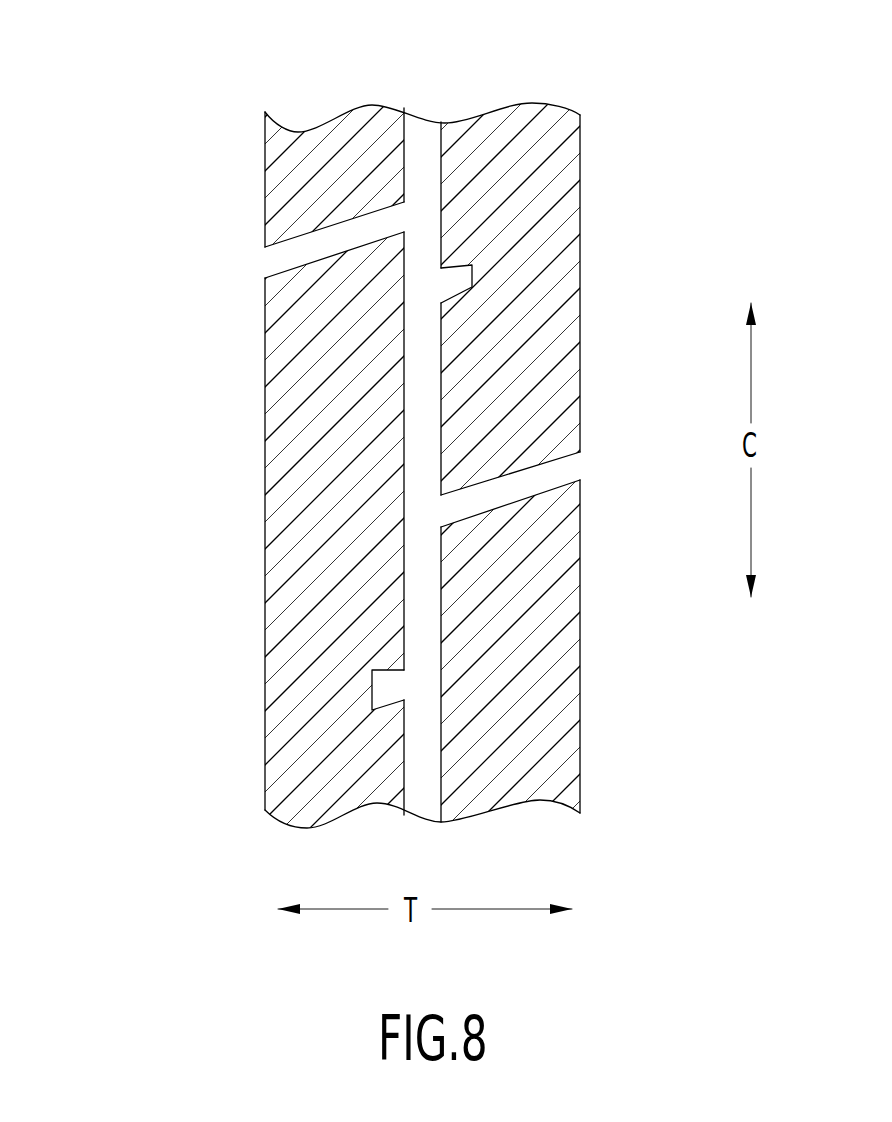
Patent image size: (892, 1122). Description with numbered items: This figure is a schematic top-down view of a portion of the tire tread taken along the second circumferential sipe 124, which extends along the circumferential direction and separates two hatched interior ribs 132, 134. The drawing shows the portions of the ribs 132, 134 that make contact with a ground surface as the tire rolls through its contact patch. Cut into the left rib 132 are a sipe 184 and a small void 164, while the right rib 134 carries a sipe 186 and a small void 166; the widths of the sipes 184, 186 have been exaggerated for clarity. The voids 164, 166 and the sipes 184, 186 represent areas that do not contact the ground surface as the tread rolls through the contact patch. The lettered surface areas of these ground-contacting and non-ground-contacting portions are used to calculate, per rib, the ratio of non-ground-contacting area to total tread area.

The circumferential sipe 124 is at (425, 118).
The interior rib 132 is at (280, 167).
The interior rib 134 is at (552, 155).
The sipe 184 is at (312, 250).
The void 166 is at (457, 287).
The sipe 186 is at (523, 483).
The void 164 is at (387, 680).